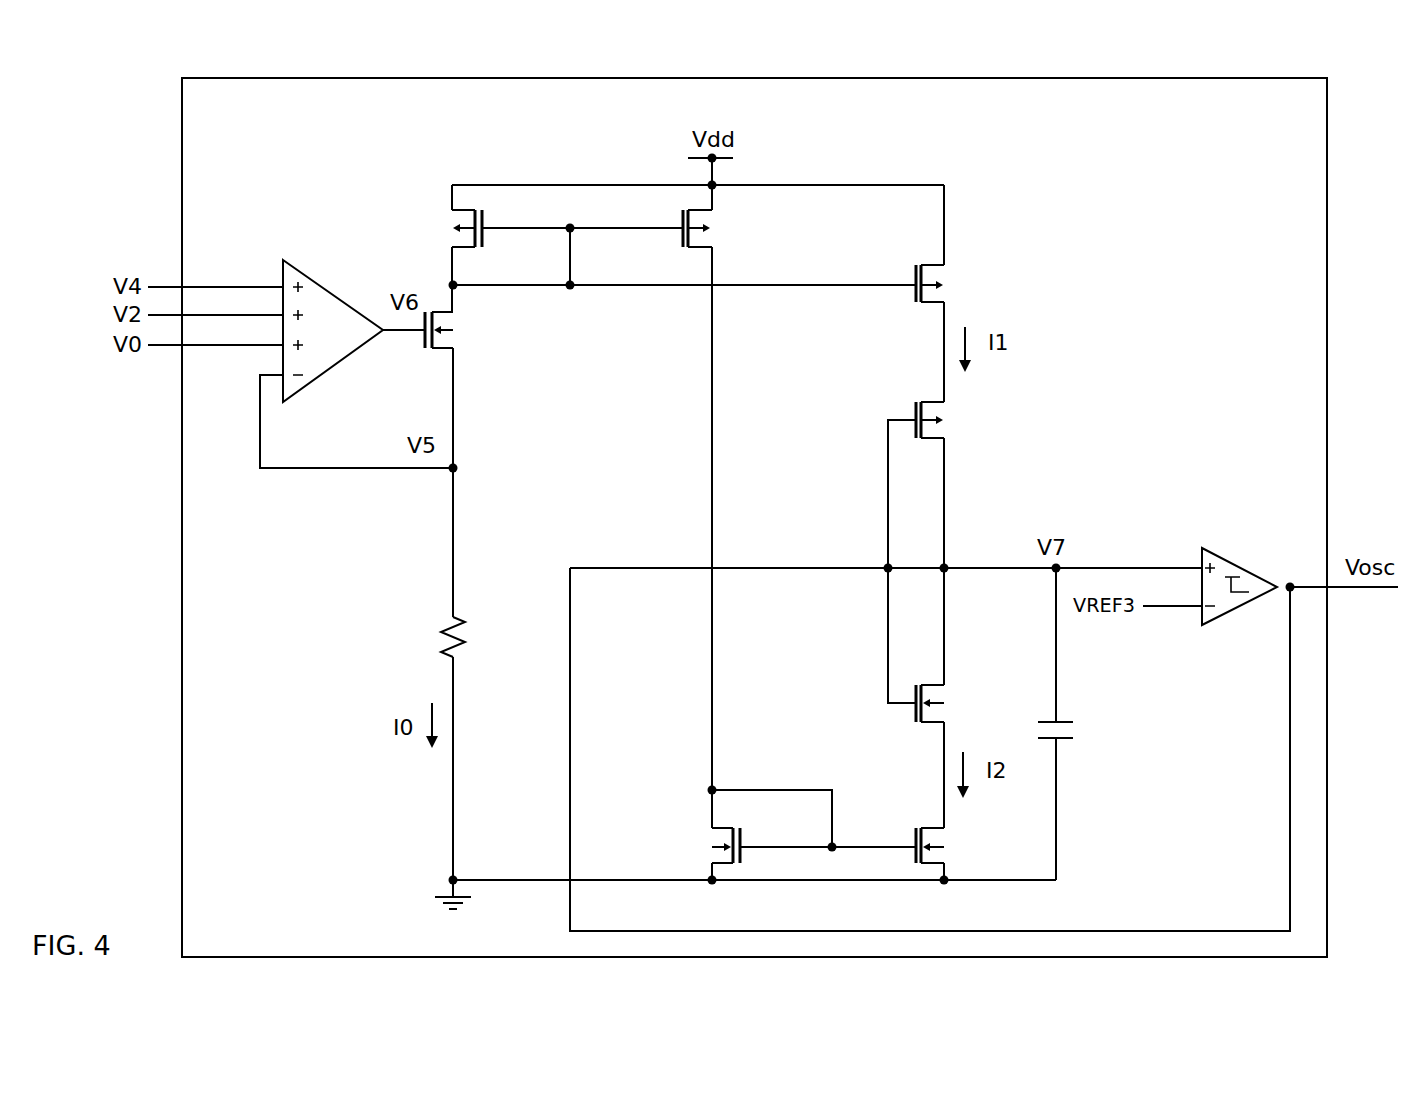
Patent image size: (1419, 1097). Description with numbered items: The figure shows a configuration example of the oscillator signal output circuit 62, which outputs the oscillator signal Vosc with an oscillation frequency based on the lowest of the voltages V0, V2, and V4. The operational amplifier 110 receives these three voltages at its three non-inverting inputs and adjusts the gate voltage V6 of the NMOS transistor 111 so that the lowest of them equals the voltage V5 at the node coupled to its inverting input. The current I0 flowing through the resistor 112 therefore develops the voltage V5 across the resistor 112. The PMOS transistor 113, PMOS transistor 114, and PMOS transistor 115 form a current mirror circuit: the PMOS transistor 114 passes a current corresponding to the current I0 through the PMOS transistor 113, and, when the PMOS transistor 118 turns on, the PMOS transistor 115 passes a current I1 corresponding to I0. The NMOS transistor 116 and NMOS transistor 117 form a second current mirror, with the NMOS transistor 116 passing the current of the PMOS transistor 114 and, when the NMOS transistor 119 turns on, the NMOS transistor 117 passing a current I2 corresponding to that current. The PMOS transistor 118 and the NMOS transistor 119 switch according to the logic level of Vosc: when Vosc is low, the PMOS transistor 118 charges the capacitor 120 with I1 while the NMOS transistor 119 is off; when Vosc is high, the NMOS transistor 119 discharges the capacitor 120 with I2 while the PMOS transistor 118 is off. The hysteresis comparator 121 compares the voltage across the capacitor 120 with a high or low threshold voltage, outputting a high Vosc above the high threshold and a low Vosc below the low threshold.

The oscillator signal output circuit 62 is at (612, 78).
The operational amplifier 110 is at (316, 283).
The NMOS transistor 111 is at (456, 341).
The resistor 112 is at (457, 626).
The PMOS transistor 113 is at (451, 246).
The PMOS transistor 114 is at (717, 248).
The PMOS transistor 115 is at (946, 298).
The NMOS transistor 116 is at (708, 862).
The NMOS transistor 117 is at (944, 870).
The PMOS transistor 118 is at (946, 435).
The NMOS transistor 119 is at (944, 719).
The capacitor 120 is at (1064, 742).
The hysteresis comparator 121 is at (1219, 556).